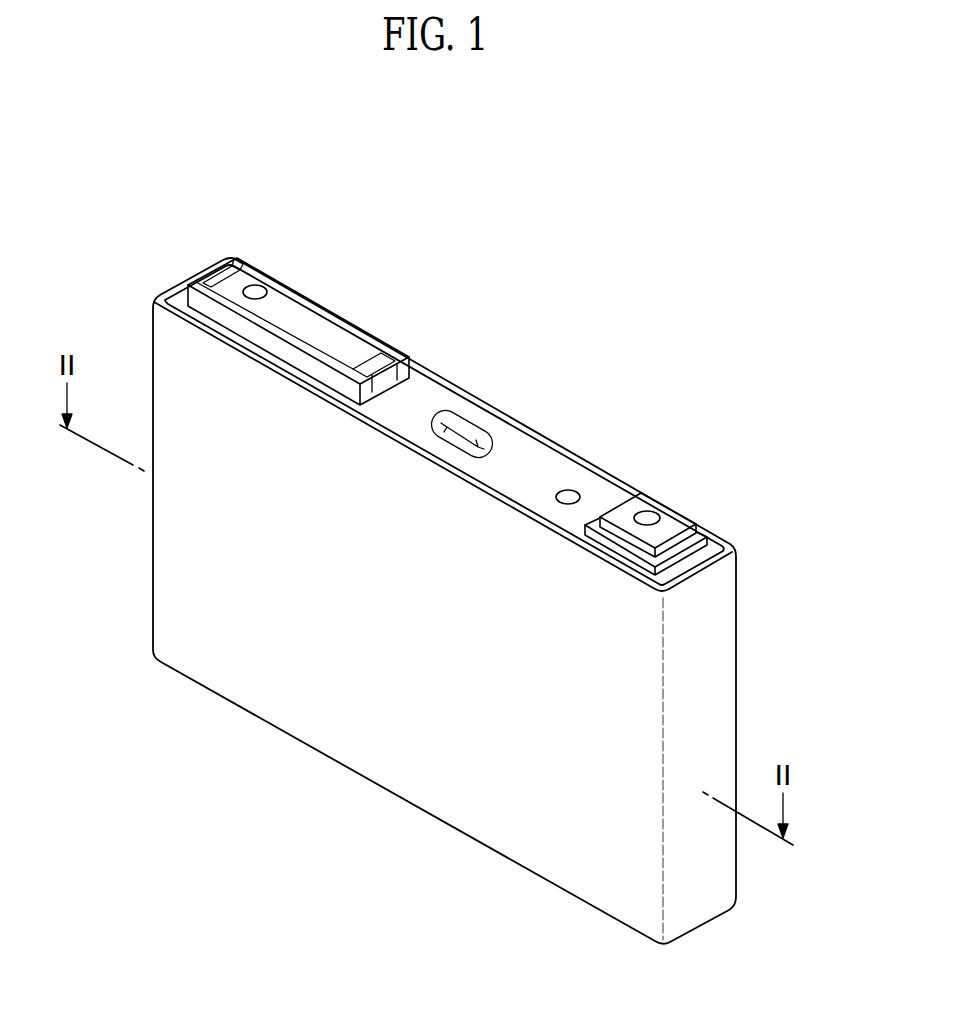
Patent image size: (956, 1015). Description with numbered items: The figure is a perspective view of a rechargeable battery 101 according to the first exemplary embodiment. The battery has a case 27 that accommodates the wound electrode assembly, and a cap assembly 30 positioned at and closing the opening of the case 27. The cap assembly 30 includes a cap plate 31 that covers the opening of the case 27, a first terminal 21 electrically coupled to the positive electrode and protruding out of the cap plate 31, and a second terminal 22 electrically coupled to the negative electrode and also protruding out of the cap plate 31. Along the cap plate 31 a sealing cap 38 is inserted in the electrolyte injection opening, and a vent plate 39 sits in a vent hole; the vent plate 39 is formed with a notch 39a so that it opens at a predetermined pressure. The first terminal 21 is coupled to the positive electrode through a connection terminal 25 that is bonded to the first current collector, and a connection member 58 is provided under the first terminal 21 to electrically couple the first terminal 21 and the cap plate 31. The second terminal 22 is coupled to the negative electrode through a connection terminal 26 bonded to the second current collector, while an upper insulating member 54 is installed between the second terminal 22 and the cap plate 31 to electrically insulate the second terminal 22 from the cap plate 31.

The rechargeable battery 101 is at (505, 218).
The first terminal 21 is at (673, 521).
The second terminal 22 is at (300, 309).
The connection terminal 25 is at (647, 512).
The connection terminal 26 is at (256, 290).
The case 27 is at (397, 754).
The cap assembly 30 is at (545, 443).
The cap plate 31 is at (418, 396).
The sealing cap 38 is at (568, 492).
The vent plate 39 is at (459, 417).
The notch 39a is at (473, 438).
The upper insulating member 54 is at (367, 333).
The connection member 58 is at (700, 531).